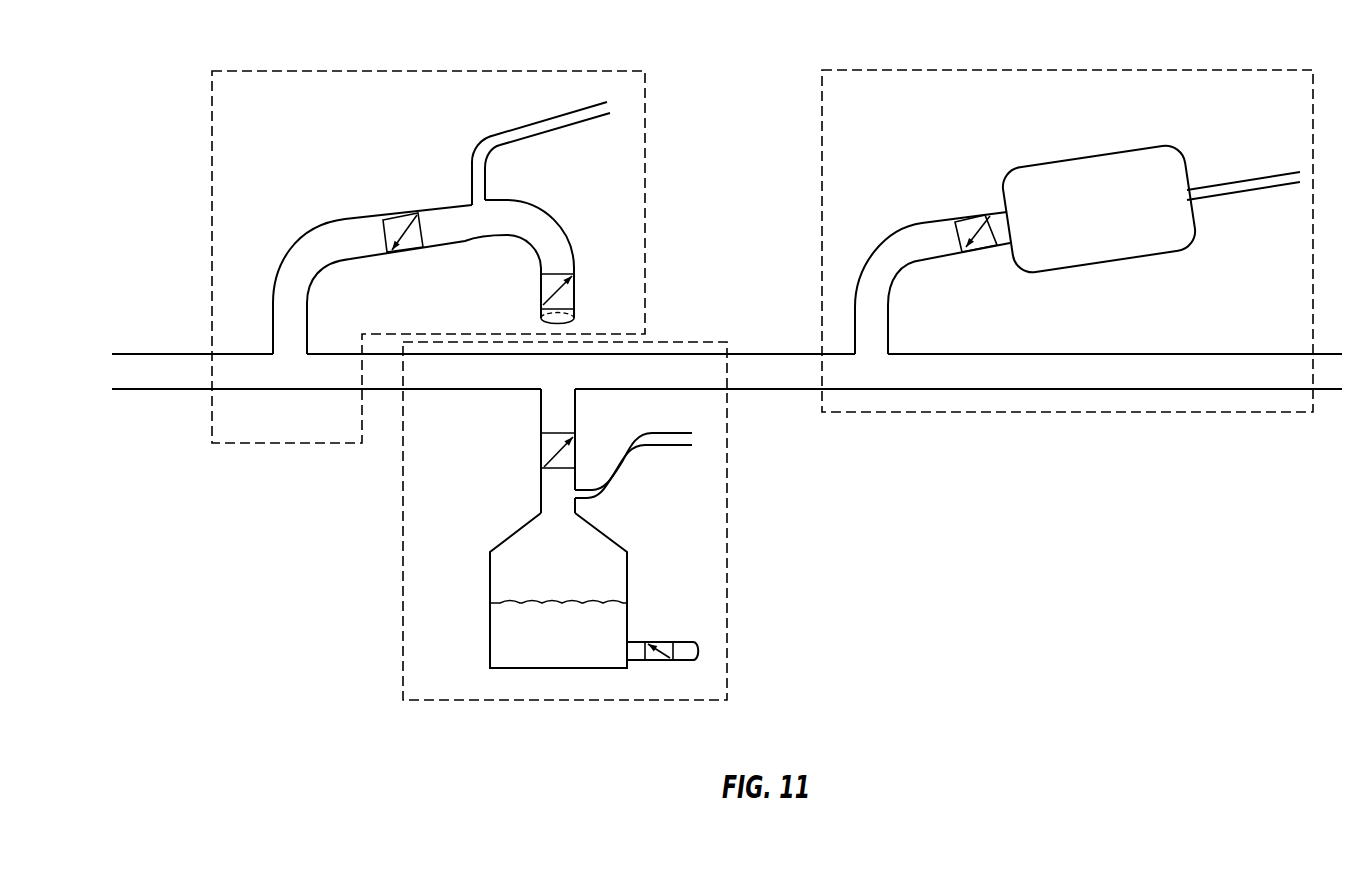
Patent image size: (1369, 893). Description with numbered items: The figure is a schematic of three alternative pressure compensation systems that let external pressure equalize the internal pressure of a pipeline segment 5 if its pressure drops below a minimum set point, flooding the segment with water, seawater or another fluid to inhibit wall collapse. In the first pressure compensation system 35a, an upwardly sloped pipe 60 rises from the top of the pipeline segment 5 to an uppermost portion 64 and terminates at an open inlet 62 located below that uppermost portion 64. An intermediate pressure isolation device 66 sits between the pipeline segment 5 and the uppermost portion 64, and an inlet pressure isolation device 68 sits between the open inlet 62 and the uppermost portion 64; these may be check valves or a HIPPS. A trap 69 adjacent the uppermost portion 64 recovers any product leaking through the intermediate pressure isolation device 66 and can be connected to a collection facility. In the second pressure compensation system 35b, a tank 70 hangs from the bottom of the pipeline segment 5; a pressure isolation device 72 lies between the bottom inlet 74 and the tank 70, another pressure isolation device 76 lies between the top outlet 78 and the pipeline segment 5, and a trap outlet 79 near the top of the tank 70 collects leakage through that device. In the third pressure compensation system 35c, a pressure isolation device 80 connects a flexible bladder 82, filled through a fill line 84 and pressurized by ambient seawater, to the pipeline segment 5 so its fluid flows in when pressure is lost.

The pipeline segment 5 is at (137, 354).
The pressure compensation system 35a is at (335, 64).
The pressure compensation system 35b is at (470, 707).
The pressure compensation system 35c is at (912, 62).
The upwardly sloped pipe 60 is at (323, 233).
The open inlet 62 is at (565, 312).
The uppermost portion 64 is at (543, 208).
The intermediate pressure isolation device 66 is at (406, 217).
The inlet pressure isolation device 68 is at (545, 295).
The trap 69 is at (530, 123).
The tank 70 is at (490, 640).
The pressure isolation device 72 is at (657, 642).
The bottom inlet 74 is at (703, 650).
The pressure isolation device 76 is at (543, 458).
The top outlet 78 is at (538, 404).
The trap outlet 79 is at (650, 447).
The pressure isolation device 80 is at (977, 219).
The flexible bladder 82 is at (1042, 165).
The fill line 84 is at (1275, 172).